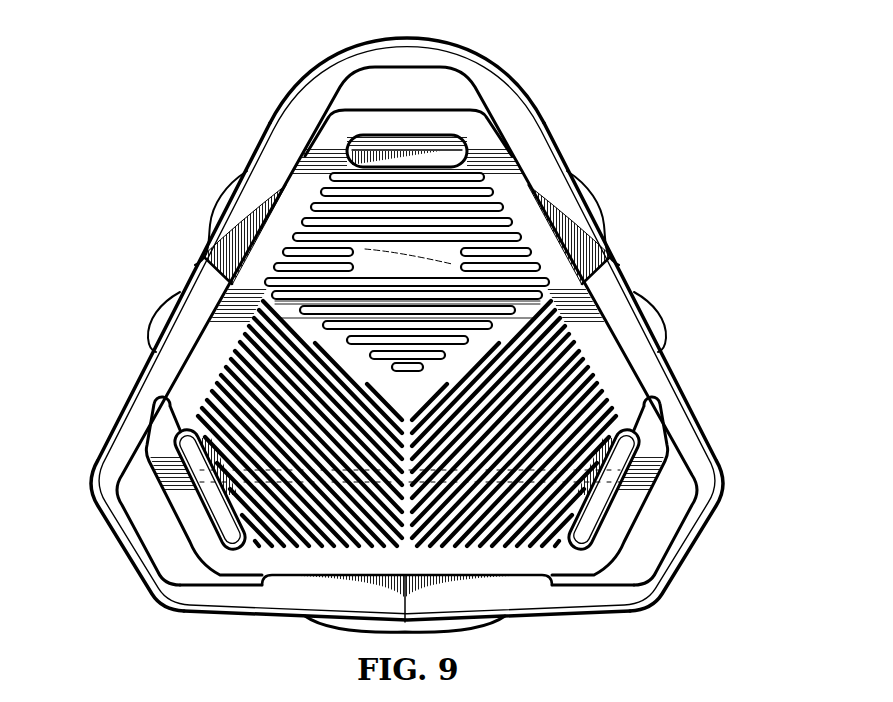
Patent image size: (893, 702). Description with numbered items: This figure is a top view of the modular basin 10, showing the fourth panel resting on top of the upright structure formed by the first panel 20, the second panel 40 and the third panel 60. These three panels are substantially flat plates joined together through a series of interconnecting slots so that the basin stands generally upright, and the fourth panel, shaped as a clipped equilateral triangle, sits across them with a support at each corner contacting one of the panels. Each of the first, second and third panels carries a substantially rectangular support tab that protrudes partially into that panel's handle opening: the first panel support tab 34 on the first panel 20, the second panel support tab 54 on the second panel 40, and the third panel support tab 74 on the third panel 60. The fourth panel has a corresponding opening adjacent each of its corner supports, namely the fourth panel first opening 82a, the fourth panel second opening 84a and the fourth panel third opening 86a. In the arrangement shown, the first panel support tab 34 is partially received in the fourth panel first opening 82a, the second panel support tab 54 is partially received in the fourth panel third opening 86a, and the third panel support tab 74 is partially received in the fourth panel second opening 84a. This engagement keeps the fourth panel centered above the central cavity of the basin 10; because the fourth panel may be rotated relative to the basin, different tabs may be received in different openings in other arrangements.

The modular basin 10 is at (672, 167).
The first panel 20 is at (548, 140).
The first panel support tab 34 is at (373, 157).
The second panel 40 is at (124, 380).
The second panel support tab 54 is at (227, 465).
The third panel 60 is at (700, 417).
The third panel support tab 74 is at (620, 480).
The fourth panel first opening 82a is at (417, 143).
The fourth panel second opening 84a is at (600, 520).
The fourth panel third opening 86a is at (217, 517).